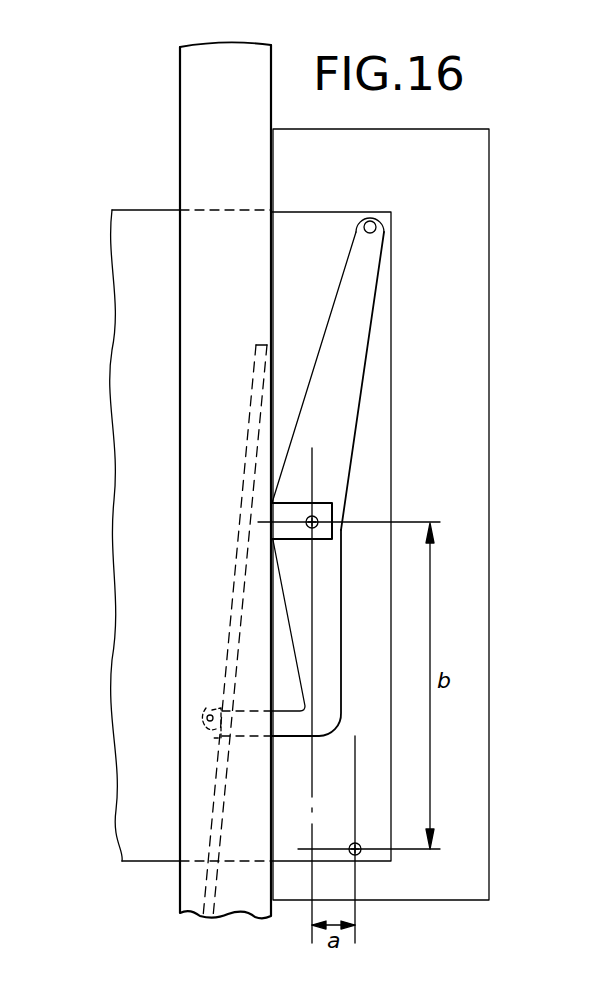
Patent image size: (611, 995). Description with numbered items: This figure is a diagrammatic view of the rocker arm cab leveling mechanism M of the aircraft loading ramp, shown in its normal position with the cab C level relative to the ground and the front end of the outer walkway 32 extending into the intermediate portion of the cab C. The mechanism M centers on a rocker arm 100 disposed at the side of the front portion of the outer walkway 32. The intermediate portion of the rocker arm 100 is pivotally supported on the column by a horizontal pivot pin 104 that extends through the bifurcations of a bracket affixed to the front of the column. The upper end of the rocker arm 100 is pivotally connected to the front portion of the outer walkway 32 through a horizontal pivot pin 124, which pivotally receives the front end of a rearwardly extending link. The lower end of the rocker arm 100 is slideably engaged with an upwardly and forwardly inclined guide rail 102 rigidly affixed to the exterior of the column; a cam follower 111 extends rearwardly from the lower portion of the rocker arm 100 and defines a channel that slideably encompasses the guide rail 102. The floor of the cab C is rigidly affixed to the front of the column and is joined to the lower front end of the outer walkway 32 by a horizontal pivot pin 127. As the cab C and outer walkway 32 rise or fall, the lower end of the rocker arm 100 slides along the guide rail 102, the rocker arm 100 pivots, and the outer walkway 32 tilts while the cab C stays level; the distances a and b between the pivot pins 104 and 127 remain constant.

The outer walkway 32 is at (151, 204).
The cab C is at (476, 400).
The rocker arm 100 is at (368, 377).
The horizontal pivot pin 124 is at (372, 220).
The rocker arm cab leveling mechanism M is at (328, 634).
The horizontal pivot pin 104 is at (318, 520).
The horizontal pivot pin 127 is at (360, 855).
The guide rail 102 is at (240, 540).
The cam follower 111 is at (208, 712).